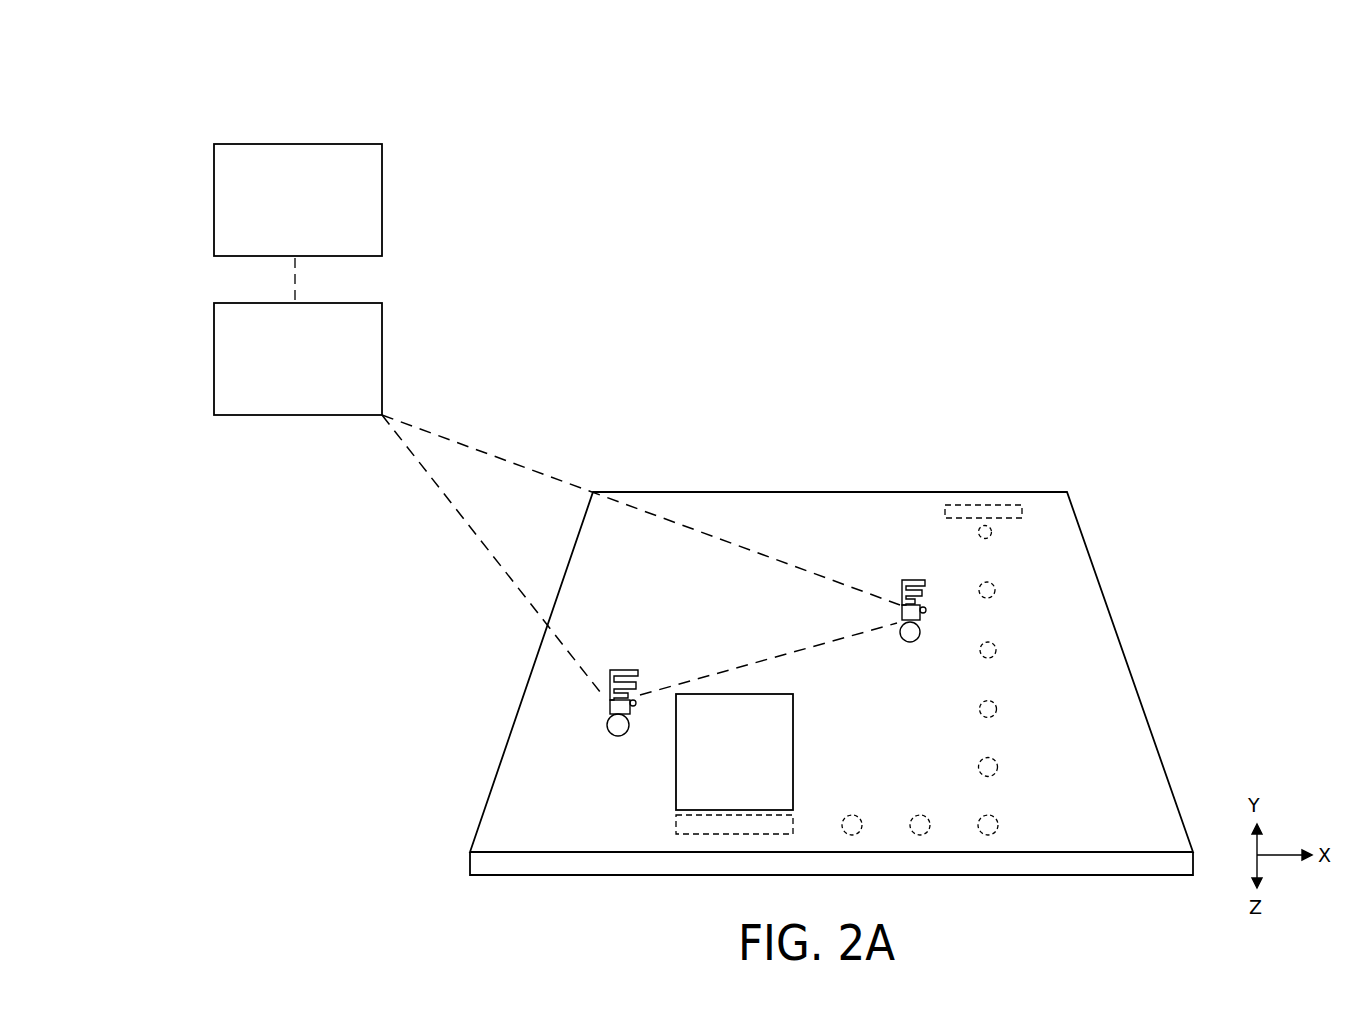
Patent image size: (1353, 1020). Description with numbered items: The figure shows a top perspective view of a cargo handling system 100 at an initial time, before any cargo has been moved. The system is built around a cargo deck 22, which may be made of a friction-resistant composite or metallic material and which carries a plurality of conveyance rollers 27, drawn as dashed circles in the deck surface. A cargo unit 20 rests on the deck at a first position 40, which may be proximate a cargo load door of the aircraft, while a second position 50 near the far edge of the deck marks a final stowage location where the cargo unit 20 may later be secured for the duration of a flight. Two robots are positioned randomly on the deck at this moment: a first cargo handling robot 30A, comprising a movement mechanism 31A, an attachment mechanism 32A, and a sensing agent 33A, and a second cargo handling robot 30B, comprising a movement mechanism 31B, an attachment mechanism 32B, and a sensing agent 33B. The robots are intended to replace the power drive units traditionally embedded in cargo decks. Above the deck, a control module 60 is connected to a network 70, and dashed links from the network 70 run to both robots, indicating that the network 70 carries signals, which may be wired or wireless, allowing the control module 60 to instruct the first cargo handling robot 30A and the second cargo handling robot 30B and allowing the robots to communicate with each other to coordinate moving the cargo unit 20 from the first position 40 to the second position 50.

The cargo handling system 100 is at (142, 118).
The control module 60 is at (382, 197).
The network 70 is at (382, 354).
The cargo deck 22 is at (1128, 671).
The second position 50 is at (1005, 505).
The conveyance rollers 27 is at (998, 762).
The cargo unit 20 is at (793, 731).
The first position 40 is at (676, 822).
The first cargo handling robot 30A is at (615, 681).
The attachment mechanism 32A is at (632, 671).
The sensing agent 33A is at (635, 707).
The movement mechanism 31A is at (610, 733).
The second cargo handling robot 30B is at (925, 581).
The attachment mechanism 32B is at (923, 582).
The sensing agent 33B is at (926, 612).
The movement mechanism 31B is at (918, 638).